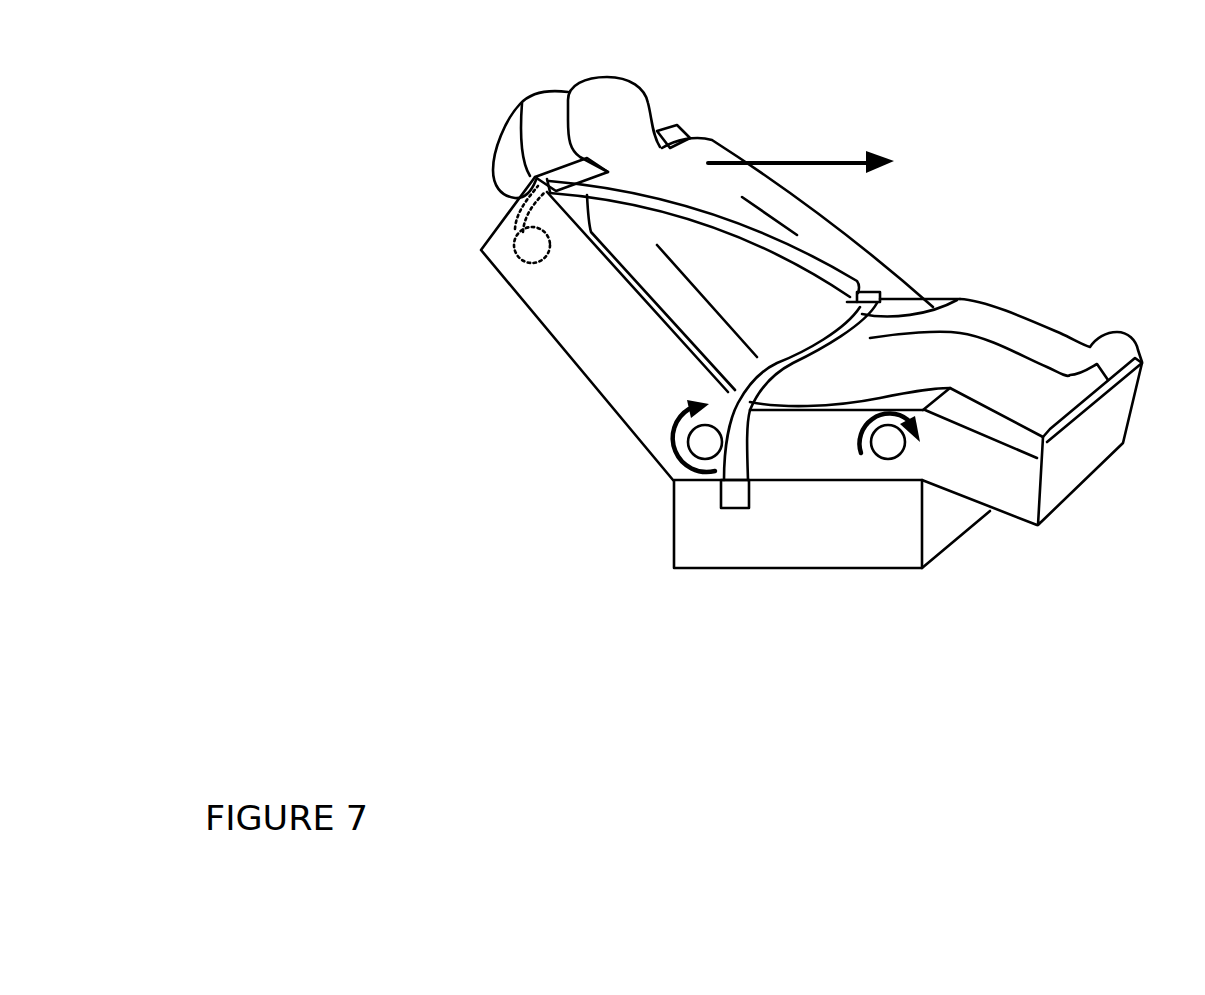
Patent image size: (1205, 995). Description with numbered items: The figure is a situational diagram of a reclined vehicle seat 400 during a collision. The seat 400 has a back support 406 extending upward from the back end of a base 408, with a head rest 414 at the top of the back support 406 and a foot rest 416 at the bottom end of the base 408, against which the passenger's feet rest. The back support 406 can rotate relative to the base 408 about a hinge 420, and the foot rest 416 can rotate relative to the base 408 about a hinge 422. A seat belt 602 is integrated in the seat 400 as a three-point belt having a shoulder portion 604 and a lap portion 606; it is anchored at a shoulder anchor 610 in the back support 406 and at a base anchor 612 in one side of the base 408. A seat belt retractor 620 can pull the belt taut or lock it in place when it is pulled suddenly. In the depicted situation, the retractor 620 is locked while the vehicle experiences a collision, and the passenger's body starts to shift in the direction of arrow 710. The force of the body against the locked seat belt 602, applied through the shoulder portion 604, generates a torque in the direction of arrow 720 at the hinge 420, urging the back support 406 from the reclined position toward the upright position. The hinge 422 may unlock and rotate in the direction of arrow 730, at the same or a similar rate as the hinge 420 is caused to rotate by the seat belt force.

The seat 400 is at (287, 773).
The back support 406 is at (550, 318).
The base 408 is at (683, 514).
The head rest 414 is at (544, 108).
The foot rest 416 is at (1082, 468).
The hinge 420 is at (688, 442).
The hinge 422 is at (891, 460).
The seat belt 602 is at (893, 213).
The shoulder portion 604 is at (718, 217).
The lap portion 606 is at (958, 300).
The shoulder anchor 610 is at (533, 172).
The base anchor 612 is at (725, 510).
The seat belt retractor 620 is at (517, 255).
The arrow 710 is at (801, 150).
The arrow 720 is at (679, 423).
The arrow 730 is at (865, 435).